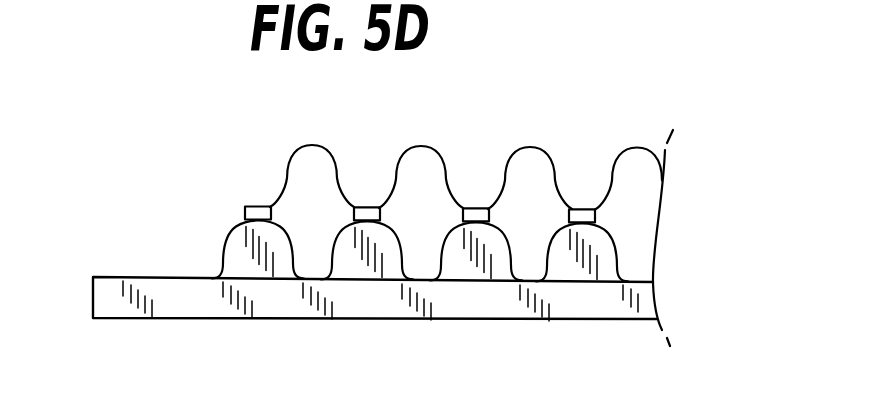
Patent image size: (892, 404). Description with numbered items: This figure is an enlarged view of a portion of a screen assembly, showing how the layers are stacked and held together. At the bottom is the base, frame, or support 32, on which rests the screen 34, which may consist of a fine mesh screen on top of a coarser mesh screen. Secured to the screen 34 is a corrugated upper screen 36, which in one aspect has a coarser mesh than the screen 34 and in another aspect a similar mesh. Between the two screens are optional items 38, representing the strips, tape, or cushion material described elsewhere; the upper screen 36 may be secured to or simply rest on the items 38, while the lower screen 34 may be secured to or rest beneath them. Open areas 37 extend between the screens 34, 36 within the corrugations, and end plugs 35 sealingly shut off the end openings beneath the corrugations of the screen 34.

The base, frame, or support 32 is at (162, 295).
The screen 34 is at (613, 243).
The end plugs 35 is at (267, 250).
The corrugated upper screen 36 is at (397, 175).
The open areas 37 is at (308, 187).
The optional items 38 is at (256, 207).